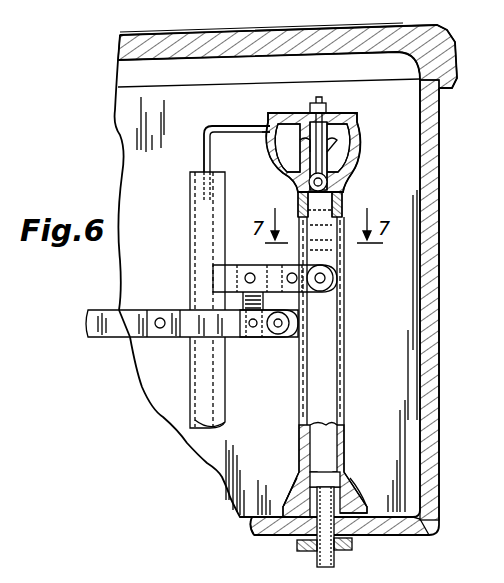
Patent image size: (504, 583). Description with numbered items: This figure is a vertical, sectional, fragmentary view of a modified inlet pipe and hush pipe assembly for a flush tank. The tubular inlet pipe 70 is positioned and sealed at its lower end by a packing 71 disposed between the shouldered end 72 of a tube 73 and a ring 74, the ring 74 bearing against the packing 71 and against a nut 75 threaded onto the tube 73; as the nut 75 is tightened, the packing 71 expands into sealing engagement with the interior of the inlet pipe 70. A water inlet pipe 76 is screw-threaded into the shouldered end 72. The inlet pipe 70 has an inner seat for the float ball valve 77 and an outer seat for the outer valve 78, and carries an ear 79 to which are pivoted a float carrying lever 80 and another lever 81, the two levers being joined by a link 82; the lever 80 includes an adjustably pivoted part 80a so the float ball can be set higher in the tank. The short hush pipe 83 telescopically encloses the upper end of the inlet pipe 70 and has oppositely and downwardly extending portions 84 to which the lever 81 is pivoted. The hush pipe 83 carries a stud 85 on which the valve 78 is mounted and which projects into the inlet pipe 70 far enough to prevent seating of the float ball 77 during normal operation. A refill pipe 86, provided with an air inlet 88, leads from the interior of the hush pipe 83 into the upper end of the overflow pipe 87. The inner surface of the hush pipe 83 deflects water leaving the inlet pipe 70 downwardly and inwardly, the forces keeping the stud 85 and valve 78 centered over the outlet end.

The inlet pipe 70 is at (350, 435).
The packing 71 is at (367, 493).
The shouldered end 72 is at (302, 487).
The tube 73 is at (290, 505).
The ring 74 is at (352, 538).
The nut 75 is at (300, 544).
The water inlet pipe 76 is at (336, 557).
The float ball valve 77 is at (328, 182).
The outer valve 78 is at (340, 132).
The ear 79 is at (290, 343).
The float carrying lever 80 is at (184, 338).
The adjustably pivoted part 80a is at (130, 340).
The lever 81 is at (228, 278).
The link 82 is at (250, 299).
The hush pipe 83 is at (360, 135).
The downwardly extending portions 84 is at (345, 250).
The stud 85 is at (326, 104).
The refill pipe 86 is at (236, 128).
The overflow pipe 87 is at (205, 394).
The air inlet 88 is at (261, 134).